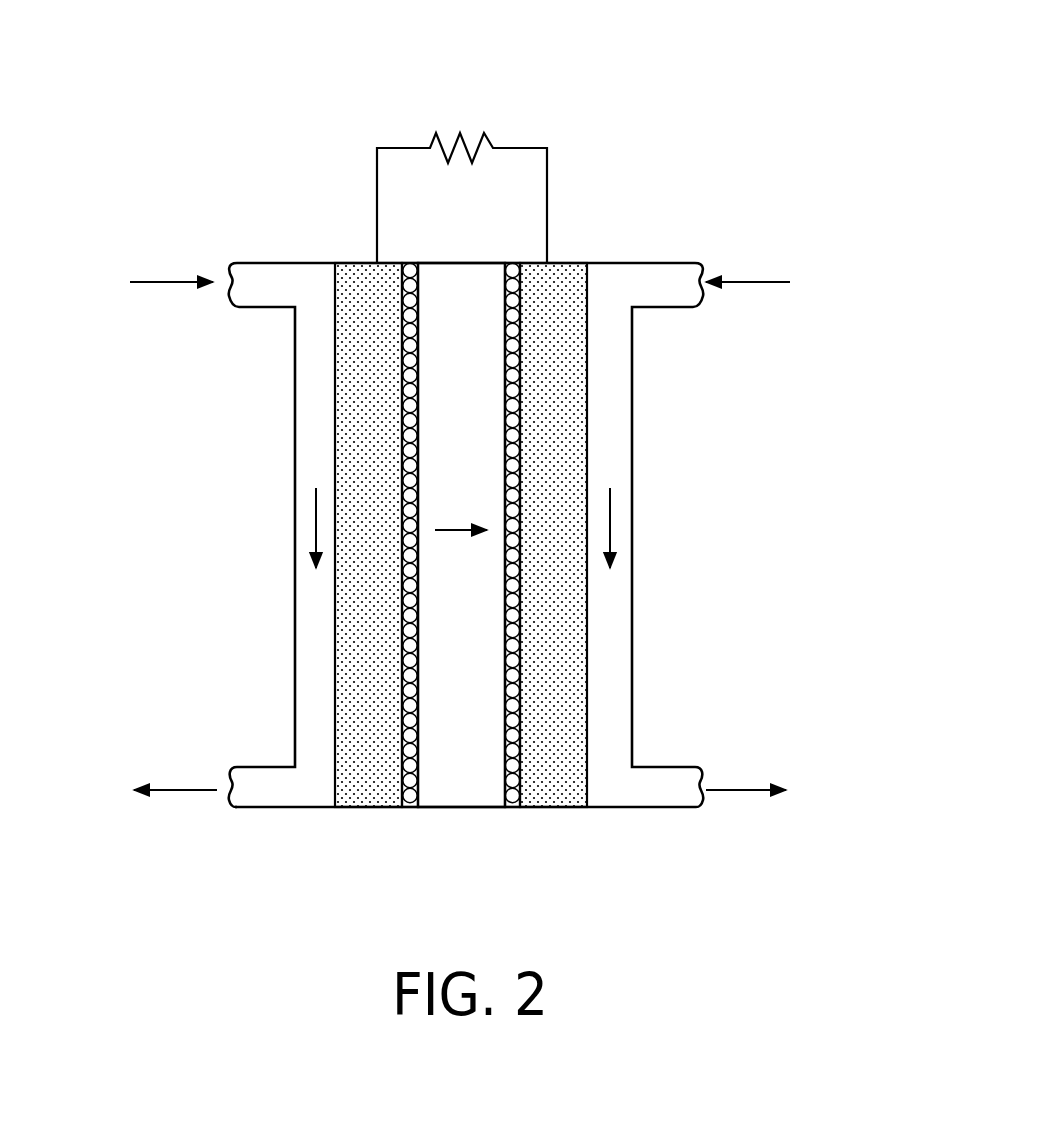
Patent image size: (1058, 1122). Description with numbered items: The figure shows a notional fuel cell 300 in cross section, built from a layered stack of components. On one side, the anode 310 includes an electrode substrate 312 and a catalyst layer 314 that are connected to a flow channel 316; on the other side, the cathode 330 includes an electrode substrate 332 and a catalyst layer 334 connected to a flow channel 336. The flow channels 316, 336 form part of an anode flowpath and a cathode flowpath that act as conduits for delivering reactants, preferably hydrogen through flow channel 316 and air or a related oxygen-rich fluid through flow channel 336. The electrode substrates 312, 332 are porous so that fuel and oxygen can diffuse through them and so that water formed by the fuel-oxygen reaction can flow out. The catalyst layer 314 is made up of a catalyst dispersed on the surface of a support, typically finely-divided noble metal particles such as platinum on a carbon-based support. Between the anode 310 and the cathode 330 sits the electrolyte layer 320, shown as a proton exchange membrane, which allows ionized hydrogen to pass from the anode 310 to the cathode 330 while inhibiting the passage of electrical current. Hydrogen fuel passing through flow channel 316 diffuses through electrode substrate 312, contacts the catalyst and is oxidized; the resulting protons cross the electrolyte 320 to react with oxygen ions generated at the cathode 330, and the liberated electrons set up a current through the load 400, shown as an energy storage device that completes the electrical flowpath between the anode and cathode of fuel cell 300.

The fuel cell 300 is at (216, 170).
The anode 310 is at (373, 540).
The electrode substrate 312 is at (350, 263).
The catalyst layer 314 is at (408, 263).
The flow channel 316 is at (295, 387).
The electrolyte layer 320 is at (416, 815).
The cathode 330 is at (550, 540).
The electrode substrate 332 is at (580, 263).
The catalyst layer 334 is at (513, 263).
The flow channel 336 is at (631, 387).
The load 400 is at (478, 135).